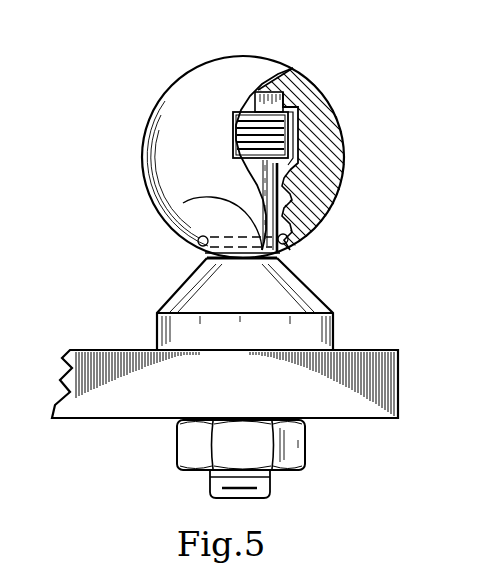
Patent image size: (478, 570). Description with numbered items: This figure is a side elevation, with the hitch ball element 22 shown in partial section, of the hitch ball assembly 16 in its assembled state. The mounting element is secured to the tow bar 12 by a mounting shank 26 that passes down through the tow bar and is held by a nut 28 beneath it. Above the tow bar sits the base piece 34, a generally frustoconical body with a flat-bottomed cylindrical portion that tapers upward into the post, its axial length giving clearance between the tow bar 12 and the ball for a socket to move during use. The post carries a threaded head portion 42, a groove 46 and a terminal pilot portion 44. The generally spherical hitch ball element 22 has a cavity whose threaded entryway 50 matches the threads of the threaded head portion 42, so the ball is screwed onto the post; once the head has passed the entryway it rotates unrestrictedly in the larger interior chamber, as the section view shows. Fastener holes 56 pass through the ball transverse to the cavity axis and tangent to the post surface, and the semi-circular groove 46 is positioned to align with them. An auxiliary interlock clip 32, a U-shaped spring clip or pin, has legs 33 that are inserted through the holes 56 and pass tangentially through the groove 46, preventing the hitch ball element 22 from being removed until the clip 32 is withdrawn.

The hitch ball assembly 16 is at (265, 267).
The hitch ball element 22 is at (203, 95).
The pilot portion 44 is at (258, 95).
The threaded head portion 42 is at (290, 127).
The threaded entryway 50 is at (305, 205).
The auxiliary interlock clip 32 is at (183, 203).
The legs 33 is at (290, 240).
The fastener holes 56 is at (198, 250).
The groove 46 is at (288, 262).
The base piece 34 is at (185, 302).
The tow bar 12 is at (387, 382).
The nut 28 is at (290, 441).
The mounting shank 26 is at (257, 490).